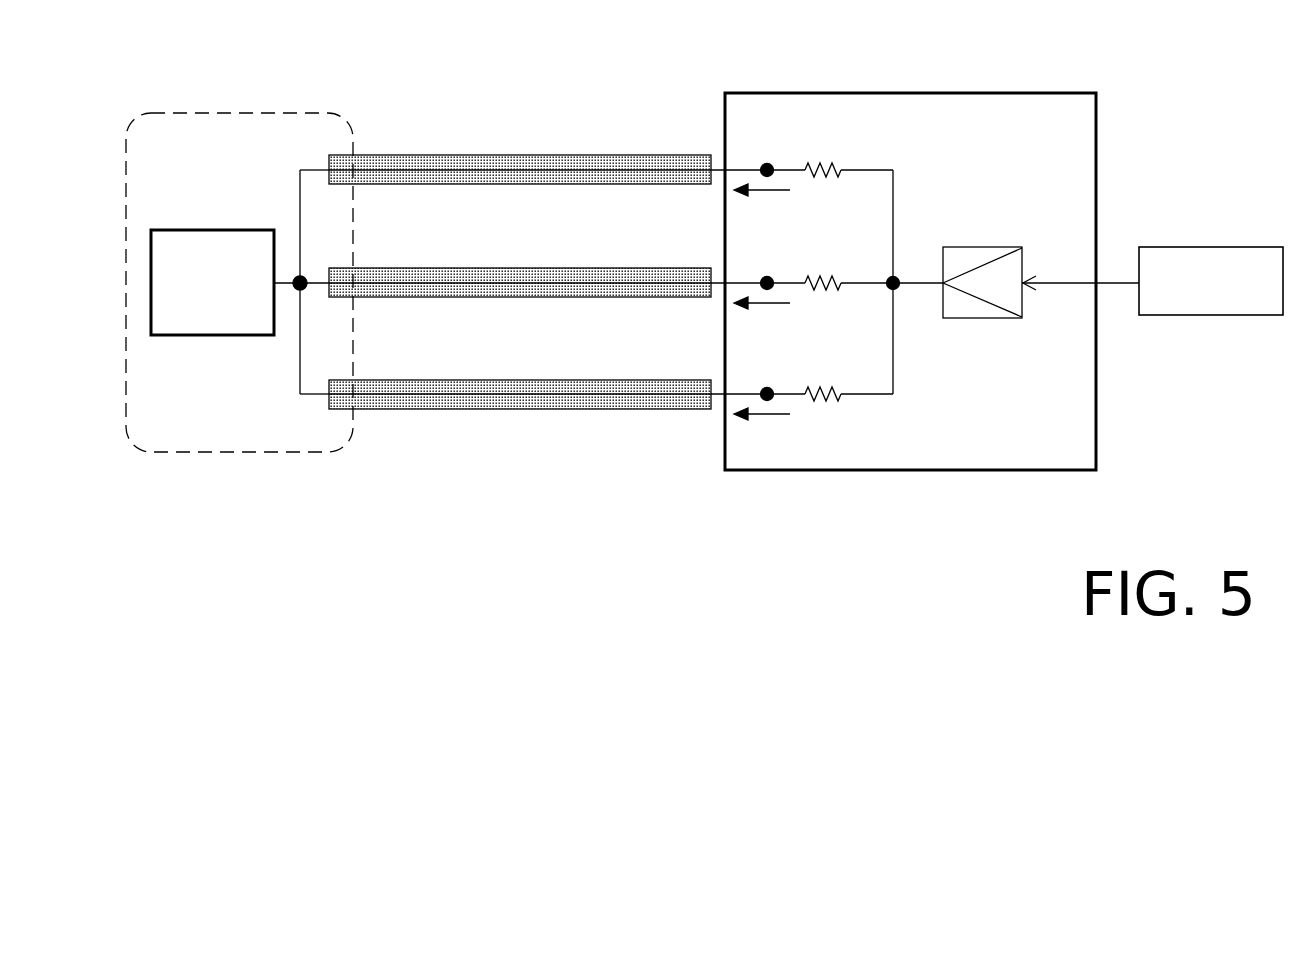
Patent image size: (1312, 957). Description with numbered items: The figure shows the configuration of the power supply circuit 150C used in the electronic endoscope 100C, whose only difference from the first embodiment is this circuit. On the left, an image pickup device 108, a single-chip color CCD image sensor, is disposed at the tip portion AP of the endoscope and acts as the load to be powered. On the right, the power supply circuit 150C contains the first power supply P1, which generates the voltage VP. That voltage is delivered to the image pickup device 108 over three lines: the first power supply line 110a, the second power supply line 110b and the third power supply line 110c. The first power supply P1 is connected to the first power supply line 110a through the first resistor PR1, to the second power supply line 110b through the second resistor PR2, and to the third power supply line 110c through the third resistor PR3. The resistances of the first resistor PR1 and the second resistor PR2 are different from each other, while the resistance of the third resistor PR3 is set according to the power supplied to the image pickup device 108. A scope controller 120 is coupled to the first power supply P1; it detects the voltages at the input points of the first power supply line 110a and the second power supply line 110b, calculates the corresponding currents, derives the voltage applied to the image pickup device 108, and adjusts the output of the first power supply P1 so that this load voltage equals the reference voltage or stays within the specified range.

The electronic endoscope 100C is at (573, 533).
The tip portion AP is at (262, 112).
The image pickup device 108 is at (215, 229).
The first power supply line 110a is at (510, 136).
The second power supply line 110b is at (510, 249).
The third power supply line 110c is at (490, 380).
The power supply circuit 150C is at (1097, 132).
The first resistor PR1 is at (830, 158).
The second resistor PR2 is at (830, 271).
The third resistor PR3 is at (830, 382).
The first power supply P1 is at (1022, 259).
The scope controller 120 is at (1198, 316).